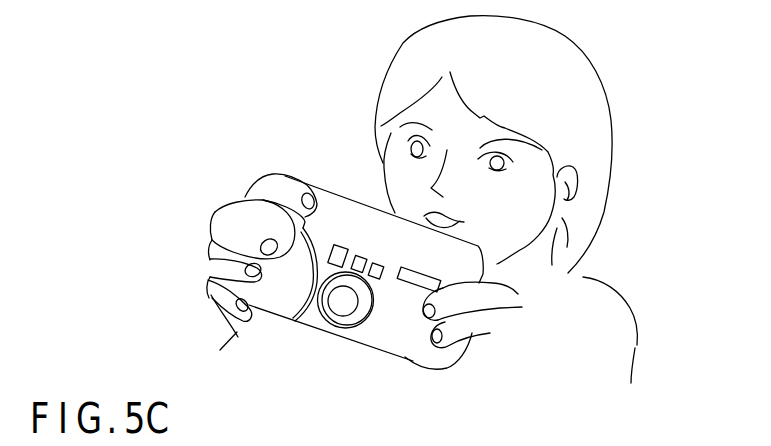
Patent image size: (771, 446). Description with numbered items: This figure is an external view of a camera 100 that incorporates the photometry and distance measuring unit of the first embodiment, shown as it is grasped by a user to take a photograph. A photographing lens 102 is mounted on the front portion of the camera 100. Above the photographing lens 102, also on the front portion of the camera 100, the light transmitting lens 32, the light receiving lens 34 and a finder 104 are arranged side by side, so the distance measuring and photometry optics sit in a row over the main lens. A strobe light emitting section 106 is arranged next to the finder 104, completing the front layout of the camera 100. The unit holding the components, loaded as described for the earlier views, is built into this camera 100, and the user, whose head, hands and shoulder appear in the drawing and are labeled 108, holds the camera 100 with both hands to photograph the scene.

The light transmitting lens 32 is at (337, 247).
The light receiving lens 34 is at (360, 256).
The camera 100 is at (422, 354).
The photographing lens 102 is at (344, 306).
The finder 104 is at (379, 266).
The strobe light emitting section 106 is at (404, 282).
The user (photographer) 108 is at (621, 336).